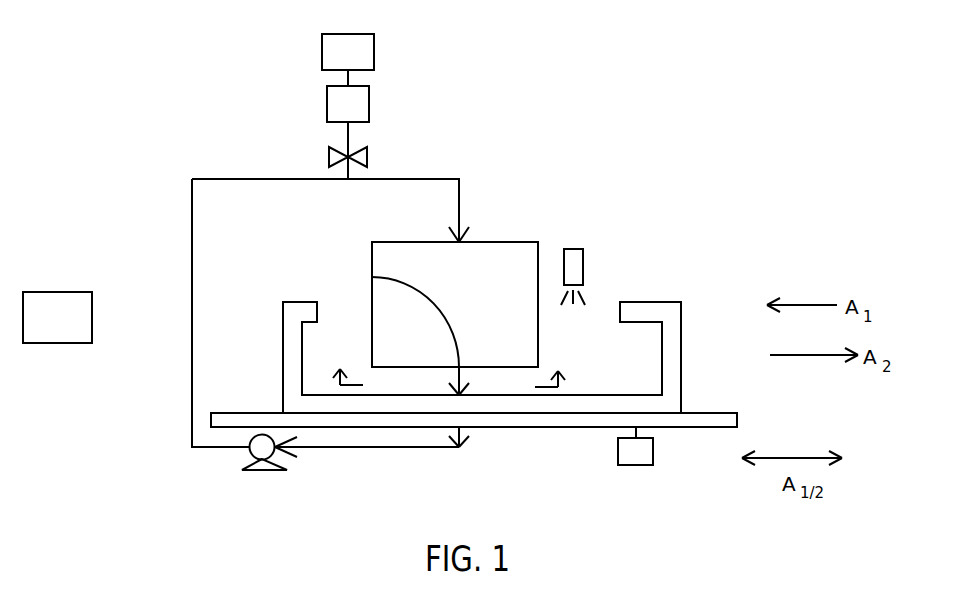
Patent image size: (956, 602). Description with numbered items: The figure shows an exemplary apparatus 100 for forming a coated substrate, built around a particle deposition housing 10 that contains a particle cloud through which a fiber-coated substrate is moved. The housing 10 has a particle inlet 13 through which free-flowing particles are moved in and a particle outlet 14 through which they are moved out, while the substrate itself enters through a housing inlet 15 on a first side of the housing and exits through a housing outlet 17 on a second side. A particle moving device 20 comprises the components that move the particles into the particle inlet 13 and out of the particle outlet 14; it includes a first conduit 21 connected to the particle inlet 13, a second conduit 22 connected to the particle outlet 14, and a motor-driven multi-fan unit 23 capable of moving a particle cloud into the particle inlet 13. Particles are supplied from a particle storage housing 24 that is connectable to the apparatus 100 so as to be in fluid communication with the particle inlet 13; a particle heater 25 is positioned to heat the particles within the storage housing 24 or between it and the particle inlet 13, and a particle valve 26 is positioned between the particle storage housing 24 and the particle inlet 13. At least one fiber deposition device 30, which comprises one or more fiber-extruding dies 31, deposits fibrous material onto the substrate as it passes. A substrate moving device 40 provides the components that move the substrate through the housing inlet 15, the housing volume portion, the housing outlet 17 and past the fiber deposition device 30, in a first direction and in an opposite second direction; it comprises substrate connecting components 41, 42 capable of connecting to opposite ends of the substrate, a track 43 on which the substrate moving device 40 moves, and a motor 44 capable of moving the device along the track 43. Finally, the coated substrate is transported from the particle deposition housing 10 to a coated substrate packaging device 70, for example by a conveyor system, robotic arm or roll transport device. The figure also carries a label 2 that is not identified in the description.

The apparatus 100 is at (797, 172).
The particle deposition housing 10 is at (512, 242).
The particle inlet 13 is at (458, 246).
The particle outlet 14 is at (372, 277).
The housing inlet 15 is at (538, 322).
The housing outlet 17 is at (372, 305).
The particle moving device 20 is at (241, 179).
The first conduit 21 is at (460, 210).
The second conduit 22 is at (462, 382).
The motor-driven multi-fan unit 23 is at (242, 468).
The particle storage housing 24 is at (375, 62).
The particle heater 25 is at (370, 103).
The particle valve 26 is at (367, 156).
The fiber deposition device 30 is at (583, 262).
The fiber-extruding die 31 is at (582, 291).
The substrate moving device 40 is at (682, 378).
The substrate connecting component 41 is at (622, 310).
The substrate connecting component 42 is at (318, 306).
The track 43 is at (668, 427).
The motor 44 is at (628, 465).
The coated substrate packaging device 70 is at (55, 292).
The object 2 is at (449, 366).